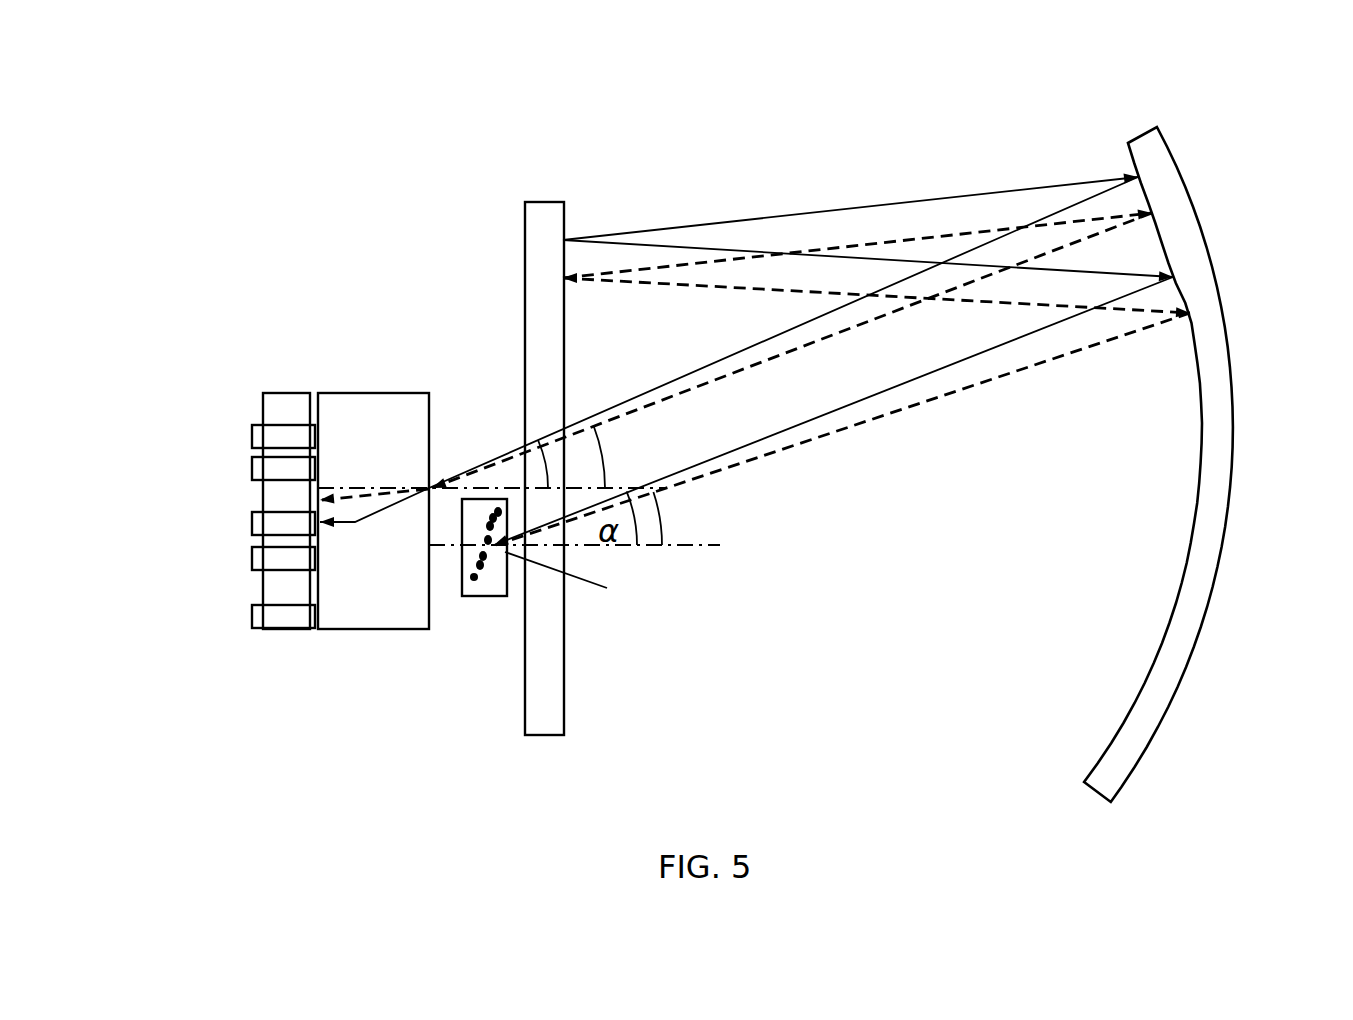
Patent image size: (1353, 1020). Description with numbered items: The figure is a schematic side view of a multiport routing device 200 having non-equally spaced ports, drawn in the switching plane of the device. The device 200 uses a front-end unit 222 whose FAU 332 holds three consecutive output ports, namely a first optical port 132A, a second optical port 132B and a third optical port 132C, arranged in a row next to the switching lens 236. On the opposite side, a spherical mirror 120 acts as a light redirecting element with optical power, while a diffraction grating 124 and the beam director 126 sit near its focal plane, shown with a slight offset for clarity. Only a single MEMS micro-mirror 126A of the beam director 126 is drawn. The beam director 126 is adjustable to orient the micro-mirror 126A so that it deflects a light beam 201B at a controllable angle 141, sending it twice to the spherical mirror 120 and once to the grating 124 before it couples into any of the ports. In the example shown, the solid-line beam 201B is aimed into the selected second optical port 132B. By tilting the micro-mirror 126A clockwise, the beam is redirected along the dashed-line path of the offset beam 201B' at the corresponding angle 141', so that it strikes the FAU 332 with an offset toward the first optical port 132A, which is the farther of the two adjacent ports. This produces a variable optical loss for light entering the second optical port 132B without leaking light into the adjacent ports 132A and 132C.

The multiport routing device 200 is at (835, 28).
The front-end unit 222 is at (338, 200).
The diffraction grating 124 is at (548, 200).
The spherical mirror 120 is at (1163, 140).
The FAU 332 is at (288, 392).
The switching lens 236 is at (375, 392).
The first optical port 132A is at (252, 463).
The second optical port 132B is at (252, 523).
The third optical port 132C is at (255, 573).
The beam director 126 is at (488, 598).
The MEMS micro-mirror 126A is at (482, 580).
The light beam 201B is at (746, 426).
The offset light beam 201B' is at (754, 376).
The controllable angle 141 is at (643, 530).
The offset deflection angle 141' is at (695, 490).